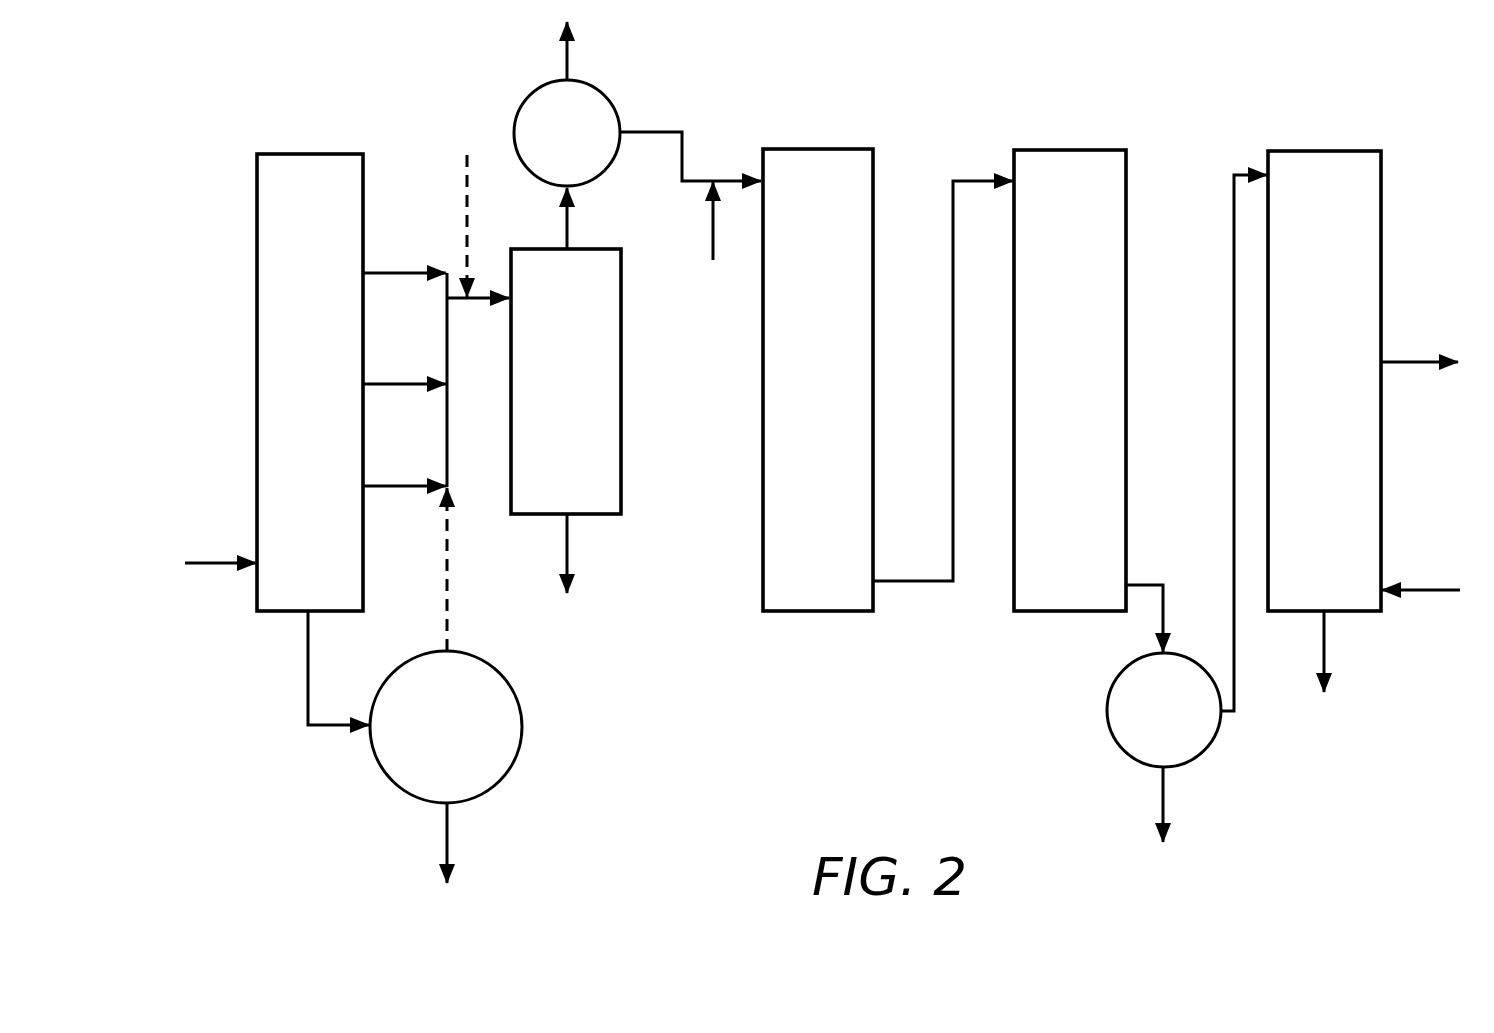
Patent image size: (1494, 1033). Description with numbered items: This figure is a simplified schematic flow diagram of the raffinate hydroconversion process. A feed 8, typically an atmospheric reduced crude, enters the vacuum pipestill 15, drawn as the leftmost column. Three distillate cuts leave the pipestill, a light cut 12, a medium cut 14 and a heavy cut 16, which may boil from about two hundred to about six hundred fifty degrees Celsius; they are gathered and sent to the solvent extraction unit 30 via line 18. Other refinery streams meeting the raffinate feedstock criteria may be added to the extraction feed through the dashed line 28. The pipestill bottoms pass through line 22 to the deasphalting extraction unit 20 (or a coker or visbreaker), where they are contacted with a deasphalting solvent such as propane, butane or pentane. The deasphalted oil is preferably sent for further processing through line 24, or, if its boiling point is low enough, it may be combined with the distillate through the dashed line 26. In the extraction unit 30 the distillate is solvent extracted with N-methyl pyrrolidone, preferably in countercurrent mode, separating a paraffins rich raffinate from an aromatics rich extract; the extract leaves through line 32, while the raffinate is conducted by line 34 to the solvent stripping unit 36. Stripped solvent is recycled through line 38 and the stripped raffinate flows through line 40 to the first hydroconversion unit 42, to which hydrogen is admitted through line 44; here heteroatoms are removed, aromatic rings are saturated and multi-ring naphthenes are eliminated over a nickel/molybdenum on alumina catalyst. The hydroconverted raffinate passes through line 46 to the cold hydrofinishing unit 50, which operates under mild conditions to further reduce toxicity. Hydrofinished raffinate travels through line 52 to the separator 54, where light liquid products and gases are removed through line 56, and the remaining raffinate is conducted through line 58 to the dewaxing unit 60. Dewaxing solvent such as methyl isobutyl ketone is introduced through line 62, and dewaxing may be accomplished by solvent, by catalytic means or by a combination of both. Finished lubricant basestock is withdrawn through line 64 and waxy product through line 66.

The feed 8 is at (218, 563).
The light distillate cut 12 is at (372, 273).
The medium distillate cut 14 is at (372, 384).
The fractionation column 15 is at (310, 382).
The heavy distillate cut 16 is at (372, 486).
The line 18 is at (476, 302).
The deasphalting extraction unit 20 is at (446, 727).
The line 22 is at (308, 653).
The line 24 is at (447, 836).
The line 26 is at (447, 570).
The line 28 is at (467, 215).
The solvent extraction unit 30 is at (566, 381).
The line 32 is at (567, 550).
The line 34 is at (567, 229).
The solvent stripping unit 36 is at (567, 133).
The line 38 is at (567, 58).
The line 40 is at (648, 132).
The first hydroconversion unit 42 is at (818, 380).
The line 44 is at (713, 222).
The line 46 is at (940, 580).
The cold hydrofinishing unit 50 is at (1070, 380).
The line 52 is at (1163, 610).
The separator 54 is at (1164, 710).
The line 56 is at (1163, 805).
The line 58 is at (1234, 652).
The dewaxing unit 60 is at (1324, 381).
The line 62 is at (1430, 590).
The line 64 is at (1410, 362).
The line 66 is at (1324, 645).